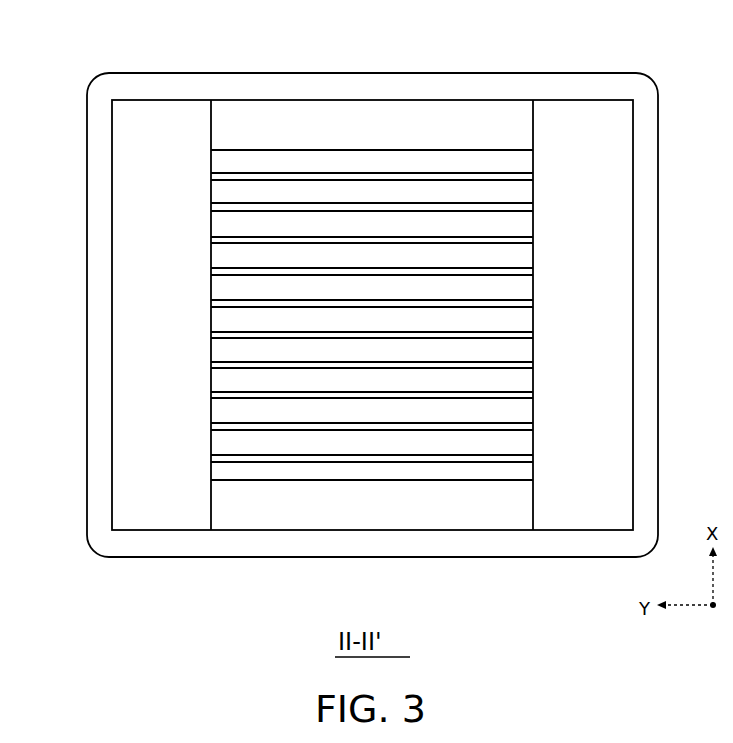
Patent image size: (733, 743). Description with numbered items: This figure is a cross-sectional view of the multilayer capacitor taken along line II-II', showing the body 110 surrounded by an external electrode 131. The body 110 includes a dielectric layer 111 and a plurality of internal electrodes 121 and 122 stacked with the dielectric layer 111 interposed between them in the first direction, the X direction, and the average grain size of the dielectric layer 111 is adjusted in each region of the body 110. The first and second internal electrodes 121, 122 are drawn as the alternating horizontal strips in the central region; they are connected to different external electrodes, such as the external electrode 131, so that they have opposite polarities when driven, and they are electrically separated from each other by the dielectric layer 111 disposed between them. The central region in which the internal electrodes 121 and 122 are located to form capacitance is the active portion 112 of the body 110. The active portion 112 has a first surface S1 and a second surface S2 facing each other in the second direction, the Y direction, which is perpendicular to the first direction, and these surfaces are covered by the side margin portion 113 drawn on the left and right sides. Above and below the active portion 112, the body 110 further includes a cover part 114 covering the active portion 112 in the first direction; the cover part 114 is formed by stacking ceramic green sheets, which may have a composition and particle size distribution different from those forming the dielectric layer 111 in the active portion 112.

The body 110 is at (317, 97).
The dielectric layer 111 is at (500, 193).
The active portion 112 is at (213, 274).
The side margin portion 113 is at (155, 158).
The cover part 114 is at (466, 128).
The first internal electrode 121 is at (260, 178).
The second internal electrode 122 is at (381, 205).
The external electrode 131 is at (556, 88).
The first surface S1 is at (211, 307).
The second surface S2 is at (535, 307).